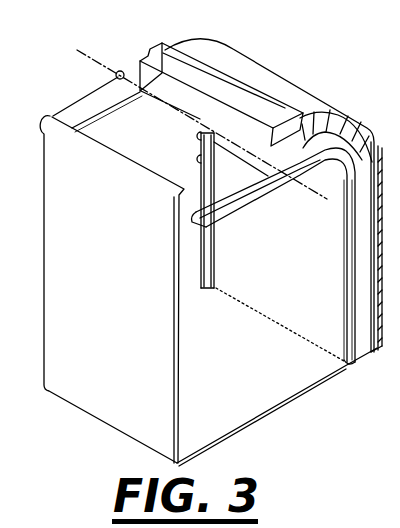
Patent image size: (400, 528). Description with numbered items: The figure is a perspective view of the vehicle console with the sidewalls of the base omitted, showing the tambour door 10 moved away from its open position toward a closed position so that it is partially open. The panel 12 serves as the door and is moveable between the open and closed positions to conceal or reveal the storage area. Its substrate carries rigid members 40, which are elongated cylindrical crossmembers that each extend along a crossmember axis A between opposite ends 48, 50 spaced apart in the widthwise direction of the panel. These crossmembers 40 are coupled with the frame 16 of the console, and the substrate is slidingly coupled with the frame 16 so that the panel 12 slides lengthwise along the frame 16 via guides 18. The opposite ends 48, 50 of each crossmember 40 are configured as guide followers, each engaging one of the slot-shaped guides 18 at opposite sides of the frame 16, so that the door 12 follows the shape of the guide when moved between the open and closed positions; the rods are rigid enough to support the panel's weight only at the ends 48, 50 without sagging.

The door 10 is at (44, 88).
The panel 12 is at (263, 80).
The frame 16 is at (40, 352).
The guides 18 is at (207, 253).
The rigid members 40 is at (194, 159).
The end 48 is at (120, 71).
The end 50 is at (304, 184).
The crossmember axis A is at (86, 58).